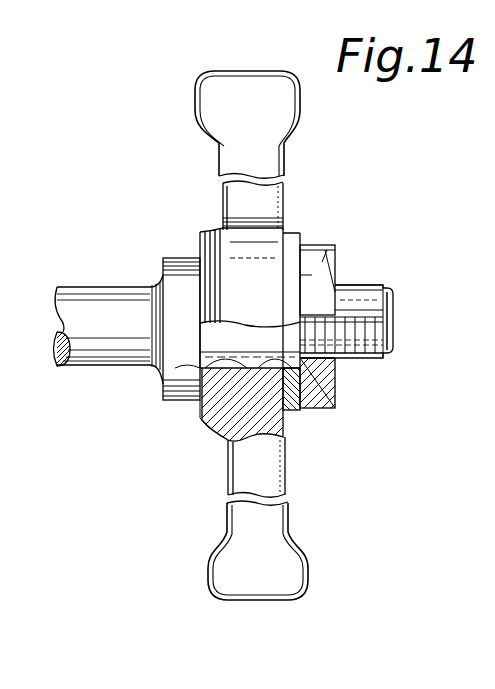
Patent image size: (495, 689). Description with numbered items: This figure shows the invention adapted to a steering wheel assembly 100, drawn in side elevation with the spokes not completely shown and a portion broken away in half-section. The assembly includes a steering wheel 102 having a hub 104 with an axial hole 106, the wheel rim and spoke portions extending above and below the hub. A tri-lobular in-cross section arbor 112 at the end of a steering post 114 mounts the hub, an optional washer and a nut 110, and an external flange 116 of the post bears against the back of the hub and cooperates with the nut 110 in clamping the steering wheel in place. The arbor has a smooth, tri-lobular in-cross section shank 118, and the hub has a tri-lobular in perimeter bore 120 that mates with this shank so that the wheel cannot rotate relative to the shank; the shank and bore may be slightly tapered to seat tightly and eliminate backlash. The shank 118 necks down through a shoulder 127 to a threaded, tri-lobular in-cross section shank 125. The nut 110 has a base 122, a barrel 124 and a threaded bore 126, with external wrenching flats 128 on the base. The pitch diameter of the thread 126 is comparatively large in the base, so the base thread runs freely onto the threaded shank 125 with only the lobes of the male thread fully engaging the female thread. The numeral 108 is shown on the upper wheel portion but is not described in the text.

The steering wheel assembly 100 is at (318, 223).
The steering wheel 102 is at (292, 468).
The hub 104 is at (207, 372).
The axial hole 106 is at (300, 418).
The upper handle 108 is at (295, 232).
The nut 110 is at (383, 286).
The arbor 112 is at (396, 321).
The steering post 114 is at (108, 292).
The external flange 116 is at (175, 382).
The shank 118 is at (185, 368).
The bore 120 is at (208, 425).
The base 122 is at (358, 290).
The barrel 124 is at (393, 296).
The threaded shank 125 is at (393, 337).
The threaded bore 126 is at (340, 364).
The shoulder 127 is at (337, 406).
The external wrenching flats 128 is at (394, 309).